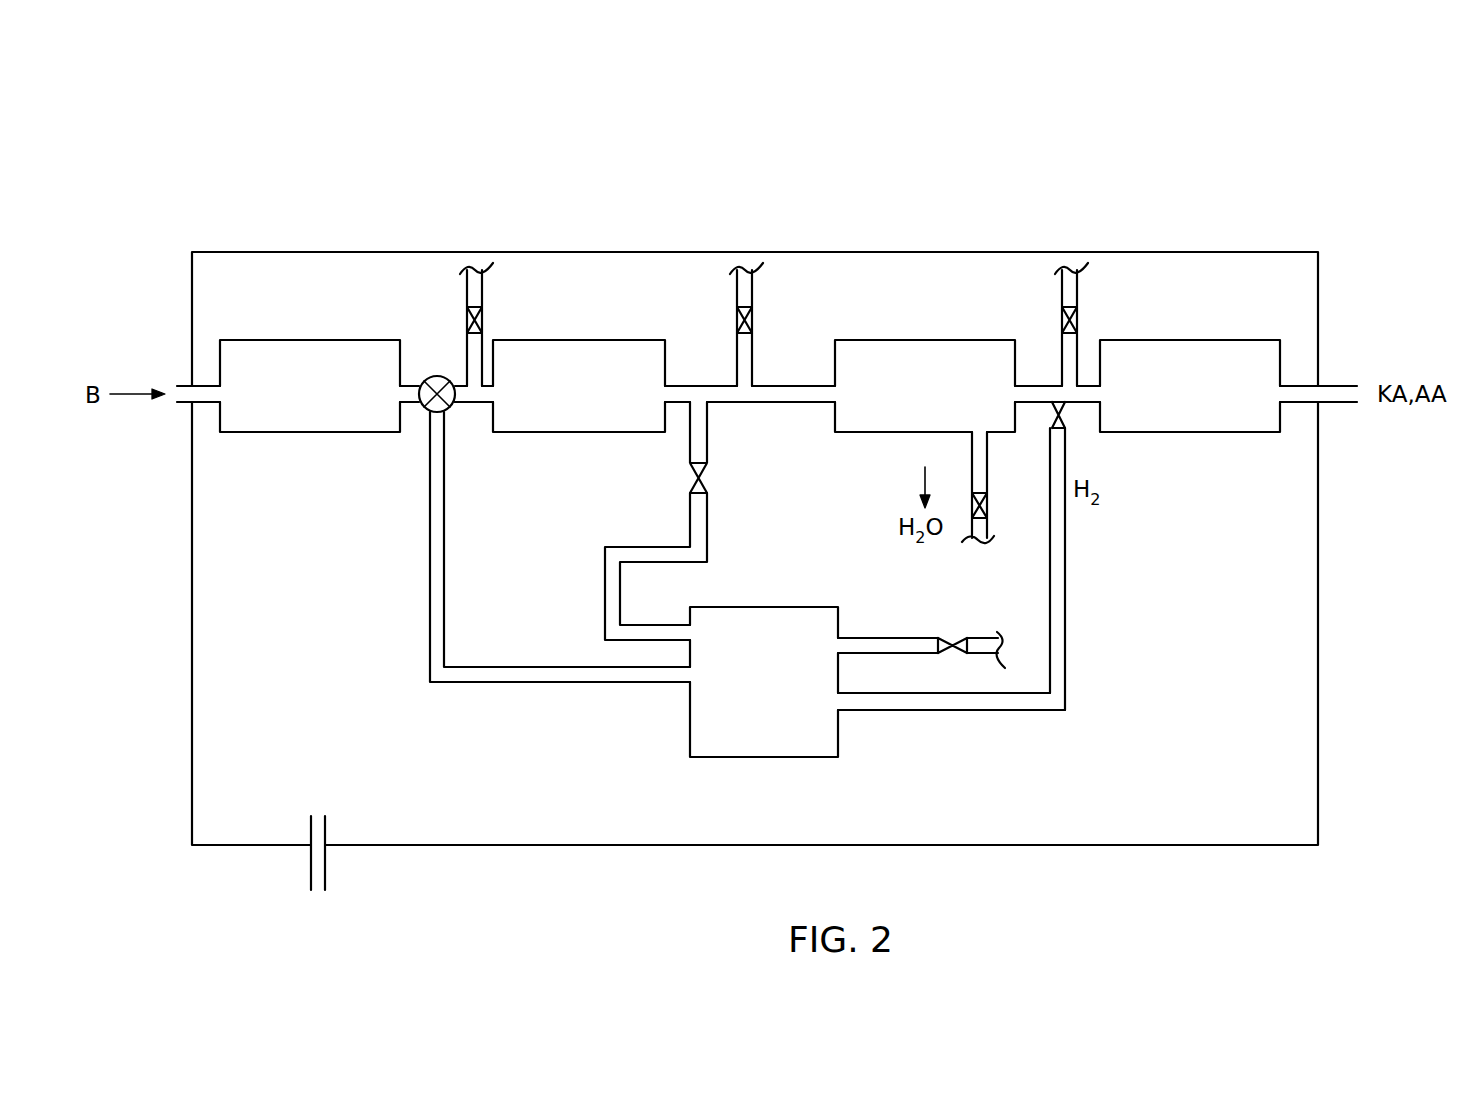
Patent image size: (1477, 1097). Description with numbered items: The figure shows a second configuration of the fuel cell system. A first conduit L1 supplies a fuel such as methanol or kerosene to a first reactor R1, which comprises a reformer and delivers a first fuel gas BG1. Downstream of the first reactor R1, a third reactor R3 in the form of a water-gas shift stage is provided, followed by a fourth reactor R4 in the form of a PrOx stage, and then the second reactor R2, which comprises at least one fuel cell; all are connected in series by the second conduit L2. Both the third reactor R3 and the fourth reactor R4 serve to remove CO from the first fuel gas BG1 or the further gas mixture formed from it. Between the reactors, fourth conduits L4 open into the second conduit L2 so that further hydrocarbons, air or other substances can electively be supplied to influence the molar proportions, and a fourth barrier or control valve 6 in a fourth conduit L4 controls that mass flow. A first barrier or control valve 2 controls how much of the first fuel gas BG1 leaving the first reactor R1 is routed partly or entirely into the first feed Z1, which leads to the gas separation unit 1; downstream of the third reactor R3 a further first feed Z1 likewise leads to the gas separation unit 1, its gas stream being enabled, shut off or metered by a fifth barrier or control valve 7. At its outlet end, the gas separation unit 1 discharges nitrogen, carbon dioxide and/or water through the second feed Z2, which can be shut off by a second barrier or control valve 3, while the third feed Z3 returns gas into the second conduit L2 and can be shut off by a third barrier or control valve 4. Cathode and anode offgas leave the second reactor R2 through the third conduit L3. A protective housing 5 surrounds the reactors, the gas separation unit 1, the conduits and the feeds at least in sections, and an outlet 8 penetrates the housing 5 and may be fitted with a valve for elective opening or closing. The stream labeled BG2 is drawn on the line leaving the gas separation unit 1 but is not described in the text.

The gas separation unit 1 is at (764, 682).
The first barrier or control valve 2 is at (437, 374).
The second barrier or control valve 3 is at (952, 655).
The third barrier or control valve 4 is at (1067, 413).
The protective housing 5 is at (1318, 650).
The fourth barrier or control valve 6 is at (733, 318).
The fifth barrier or control valve 7 is at (695, 478).
The outlet 8 is at (311, 866).
The first reactor R1 is at (315, 355).
The second reactor R2 is at (1228, 355).
The third reactor R3 is at (600, 357).
The fourth reactor R4 is at (930, 355).
The first conduit L1 is at (212, 405).
The second conduit L2 is at (457, 387).
The third conduit L3 is at (1333, 386).
The fourth conduit L4 is at (477, 347).
The first fuel gas BG1 is at (478, 405).
The second branch line BG2 is at (1065, 605).
The first feed Z1 is at (430, 545).
The second feed Z2 is at (860, 638).
The third feed Z3 is at (975, 712).